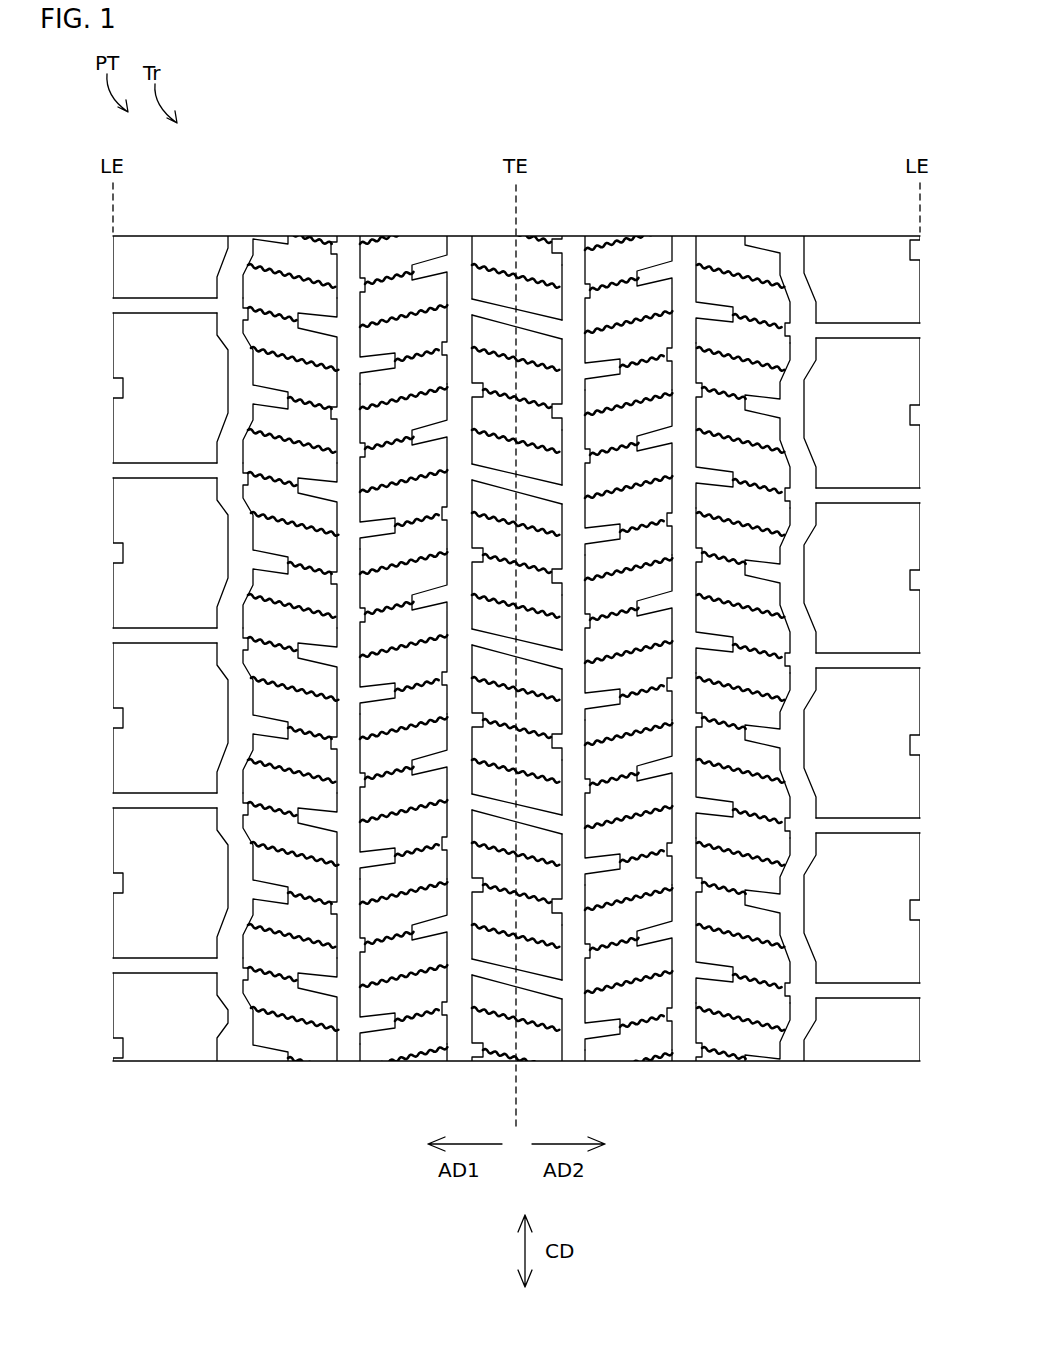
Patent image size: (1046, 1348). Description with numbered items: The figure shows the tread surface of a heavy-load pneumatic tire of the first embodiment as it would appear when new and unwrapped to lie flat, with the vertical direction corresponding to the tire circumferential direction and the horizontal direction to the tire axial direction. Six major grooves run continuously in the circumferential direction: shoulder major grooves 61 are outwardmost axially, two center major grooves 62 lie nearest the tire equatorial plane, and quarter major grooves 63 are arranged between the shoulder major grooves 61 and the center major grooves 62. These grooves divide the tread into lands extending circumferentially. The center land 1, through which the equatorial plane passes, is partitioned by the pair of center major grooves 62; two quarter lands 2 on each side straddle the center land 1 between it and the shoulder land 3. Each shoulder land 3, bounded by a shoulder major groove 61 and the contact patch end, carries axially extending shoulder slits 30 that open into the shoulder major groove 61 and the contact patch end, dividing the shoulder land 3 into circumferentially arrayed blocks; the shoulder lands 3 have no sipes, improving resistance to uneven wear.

The center land 1 is at (506, 225).
The quarter land 2 is at (328, 224).
The shoulder land 3 is at (168, 225).
The shoulder slit 30 is at (121, 309).
The shoulder major groove 61 is at (248, 223).
The center major groove 62 is at (468, 222).
The quarter major groove 63 is at (358, 223).